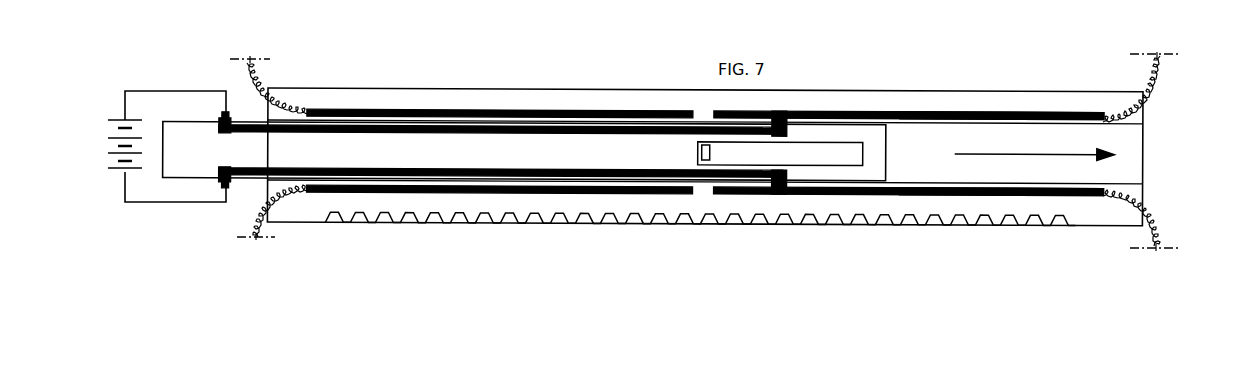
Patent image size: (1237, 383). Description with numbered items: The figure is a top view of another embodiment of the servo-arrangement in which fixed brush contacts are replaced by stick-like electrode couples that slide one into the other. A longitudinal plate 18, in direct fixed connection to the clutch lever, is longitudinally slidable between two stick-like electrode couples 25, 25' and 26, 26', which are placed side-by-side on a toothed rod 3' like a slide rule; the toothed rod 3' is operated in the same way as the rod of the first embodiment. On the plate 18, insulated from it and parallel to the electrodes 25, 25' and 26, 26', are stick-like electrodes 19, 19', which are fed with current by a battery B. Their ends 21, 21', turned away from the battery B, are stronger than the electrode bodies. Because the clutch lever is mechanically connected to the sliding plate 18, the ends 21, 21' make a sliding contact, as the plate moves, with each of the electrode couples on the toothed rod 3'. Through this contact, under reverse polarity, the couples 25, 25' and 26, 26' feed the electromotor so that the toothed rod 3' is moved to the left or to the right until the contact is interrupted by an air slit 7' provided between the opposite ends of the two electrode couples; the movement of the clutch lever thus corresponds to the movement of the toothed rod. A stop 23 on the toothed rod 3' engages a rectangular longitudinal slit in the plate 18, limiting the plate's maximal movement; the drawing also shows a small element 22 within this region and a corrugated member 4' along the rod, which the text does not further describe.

The air slit 7' is at (705, 123).
The toothed rod 3' is at (746, 152).
The longitudinal plate 18 is at (289, 147).
The stick-like electrode 19 is at (492, 80).
The stick-like electrode 19' is at (493, 220).
The stick-like electrode 25 is at (500, 67).
The stick-like electrode 25' is at (500, 236).
The end of stick-like electrode 21 is at (909, 88).
The end of stick-like electrode 21' is at (909, 221).
The stick-like electrode 26 is at (1002, 74).
The stick-like electrode 26' is at (1002, 233).
The stop 23 is at (780, 154).
The sensor element 22 is at (705, 155).
The corrugated return spring 4' is at (700, 257).
The battery B is at (156, 146).